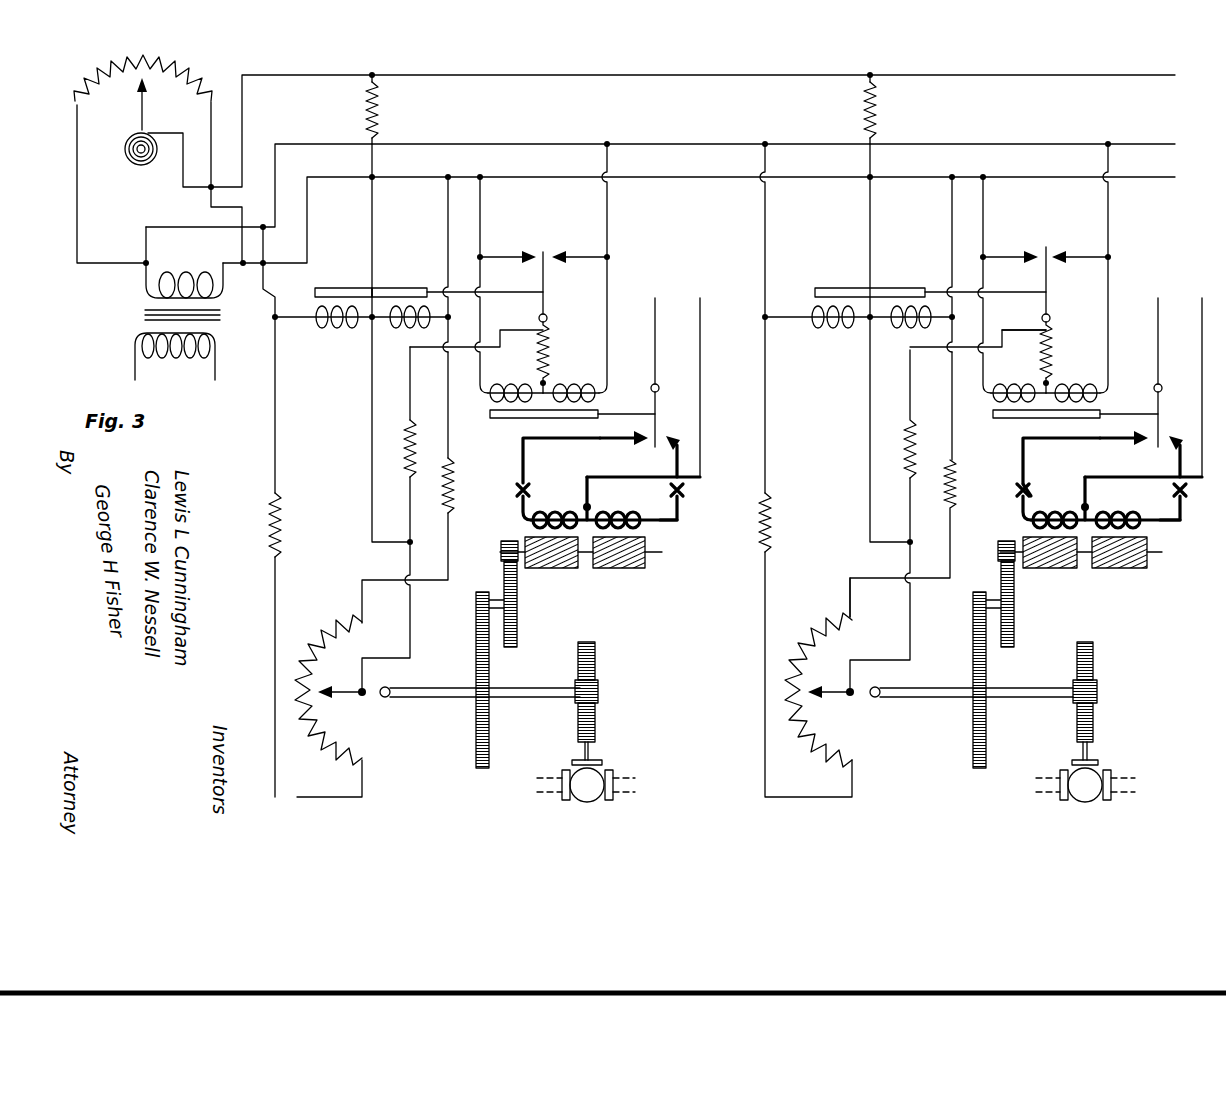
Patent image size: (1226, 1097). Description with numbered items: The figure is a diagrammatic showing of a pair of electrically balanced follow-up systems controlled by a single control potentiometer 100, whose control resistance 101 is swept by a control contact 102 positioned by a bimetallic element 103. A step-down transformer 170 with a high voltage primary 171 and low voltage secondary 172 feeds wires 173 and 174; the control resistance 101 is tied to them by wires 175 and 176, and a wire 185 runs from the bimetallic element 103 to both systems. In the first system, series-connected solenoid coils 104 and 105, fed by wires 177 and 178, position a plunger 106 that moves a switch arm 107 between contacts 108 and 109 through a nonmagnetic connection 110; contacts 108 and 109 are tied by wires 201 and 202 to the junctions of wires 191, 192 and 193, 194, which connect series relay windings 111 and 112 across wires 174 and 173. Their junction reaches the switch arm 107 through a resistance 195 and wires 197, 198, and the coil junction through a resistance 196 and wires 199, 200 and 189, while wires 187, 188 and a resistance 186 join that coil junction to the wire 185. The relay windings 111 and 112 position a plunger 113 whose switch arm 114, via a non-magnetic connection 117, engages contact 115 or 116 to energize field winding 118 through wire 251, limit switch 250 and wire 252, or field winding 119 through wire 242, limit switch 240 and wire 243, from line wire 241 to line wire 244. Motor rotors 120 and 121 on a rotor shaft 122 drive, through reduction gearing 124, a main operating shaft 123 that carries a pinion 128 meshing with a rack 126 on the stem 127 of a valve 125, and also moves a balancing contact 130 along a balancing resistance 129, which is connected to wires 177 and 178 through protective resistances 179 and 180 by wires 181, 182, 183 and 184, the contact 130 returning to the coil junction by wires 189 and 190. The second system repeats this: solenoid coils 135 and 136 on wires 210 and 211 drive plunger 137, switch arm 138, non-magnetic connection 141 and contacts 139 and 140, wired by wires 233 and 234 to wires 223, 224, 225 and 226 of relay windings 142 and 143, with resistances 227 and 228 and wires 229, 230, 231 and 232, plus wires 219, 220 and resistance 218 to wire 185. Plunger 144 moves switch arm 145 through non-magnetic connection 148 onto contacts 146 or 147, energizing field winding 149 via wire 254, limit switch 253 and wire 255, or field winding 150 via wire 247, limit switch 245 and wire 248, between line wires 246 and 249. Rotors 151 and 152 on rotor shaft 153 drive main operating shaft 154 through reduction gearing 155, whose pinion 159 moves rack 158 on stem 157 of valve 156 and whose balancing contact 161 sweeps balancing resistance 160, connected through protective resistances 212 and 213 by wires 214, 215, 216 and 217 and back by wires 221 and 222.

The control potentiometer 100 is at (174, 70).
The control resistance 101 is at (210, 84).
The control contact 102 is at (138, 112).
The bimetallic element 103 is at (150, 166).
The solenoid coil 104 is at (334, 330).
The solenoid coil 105 is at (404, 326).
The plunger 106 is at (338, 286).
The switch arm 107 is at (546, 280).
The contact 108 is at (527, 250).
The contact 109 is at (560, 250).
The nonmagnetic connection 110 is at (428, 284).
The relay winding 111 is at (516, 390).
The relay winding 112 is at (578, 390).
The plunger 113 is at (520, 418).
The switch arm 114 is at (658, 428).
The contact 115 is at (642, 434).
The contact 116 is at (674, 452).
The non-magnetic connection 117 is at (625, 410).
The field winding 118 is at (562, 510).
The field winding 119 is at (622, 510).
The motor rotor 120 is at (558, 570).
The motor rotor 121 is at (624, 570).
The rotor shaft 122 is at (505, 542).
The main operating shaft 123 is at (520, 700).
The reduction gearing 124 is at (517, 612).
The valve 125 is at (596, 780).
The rack 126 is at (596, 656).
The stem 127 is at (590, 752).
The pinion 128 is at (600, 688).
The balancing resistance 129 is at (330, 640).
The balancing contact 130 is at (348, 698).
The solenoid coil 135 is at (832, 326).
The solenoid coil 136 is at (904, 326).
The plunger 137 is at (846, 276).
The switch arm 138 is at (1050, 286).
The contact 139 is at (1034, 253).
The contact 140 is at (1060, 250).
The non-magnetic connection 141 is at (998, 292).
The relay winding 142 is at (1022, 390).
The relay winding 143 is at (1080, 390).
The plunger 144 is at (1006, 418).
The switch arm 145 is at (1162, 412).
The contact 146 is at (1140, 444).
The contact 147 is at (1176, 434).
The non-magnetic connection 148 is at (1128, 412).
The field winding 149 is at (1058, 510).
The field winding 150 is at (1124, 510).
The motor rotor 151 is at (1076, 570).
The motor rotor 152 is at (1136, 570).
The rotor shaft 153 is at (1016, 556).
The main operating shaft 154 is at (1024, 698).
The reduction gearing 155 is at (1015, 612).
The valve 156 is at (1096, 780).
The stem 157 is at (1090, 752).
The rack 158 is at (1094, 656).
The pinion 159 is at (1098, 688).
The balancing resistance 160 is at (820, 640).
The balancing contact 161 is at (850, 698).
The step-down transformer 170 is at (141, 316).
The high voltage primary 171 is at (188, 366).
The low voltage secondary 172 is at (186, 278).
The wire 173 is at (665, 146).
The wire 174 is at (690, 178).
The wire 175 is at (77, 200).
The wire 176 is at (210, 120).
The wire 177 is at (262, 292).
The wire 178 is at (445, 232).
The protective resistance 179 is at (281, 518).
The protective resistance 180 is at (456, 470).
The wire 181 is at (272, 440).
The wire 182 is at (284, 566).
The wire 183 is at (452, 426).
The wire 184 is at (450, 552).
The wire 185 is at (661, 131).
The resistance 186 is at (380, 118).
The wire 187 is at (370, 232).
The wire 188 is at (380, 88).
The wire 189 is at (370, 424).
The wire 190 is at (414, 632).
The wire 191 is at (484, 290).
The wire 192 is at (482, 212).
The wire 193 is at (610, 274).
The wire 194 is at (610, 216).
The resistance 195 is at (550, 340).
The resistance 196 is at (406, 470).
The wire 197 is at (538, 360).
The wire 198 is at (548, 318).
The wire 199 is at (412, 408).
The wire 200 is at (408, 524).
The wire 201 is at (510, 256).
The wire 202 is at (590, 256).
The wire 210 is at (770, 200).
The wire 211 is at (948, 232).
The protective resistance 212 is at (772, 516).
The protective resistance 213 is at (958, 506).
The wire 214 is at (767, 420).
The wire 215 is at (768, 572).
The wire 216 is at (952, 432).
The wire 217 is at (880, 578).
The resistance 218 is at (878, 118).
The wire 219 is at (874, 212).
The wire 220 is at (878, 88).
The wire 221 is at (868, 436).
The wire 222 is at (910, 626).
The wire 223 is at (984, 308).
The wire 224 is at (988, 212).
The wire 225 is at (1112, 276).
The wire 226 is at (1112, 206).
The resistance 227 is at (1054, 344).
The resistance 228 is at (906, 466).
The wire 229 is at (1054, 366).
The wire 230 is at (1051, 320).
The wire 231 is at (1022, 330).
The wire 232 is at (908, 506).
The wire 233 is at (1010, 254).
The wire 234 is at (1090, 256).
The limit switch 240 is at (684, 488).
The line wire 241 is at (656, 308).
The wire 242 is at (688, 438).
The wire 243 is at (672, 520).
The line wire 244 is at (698, 342).
The limit switch 245 is at (1188, 492).
The line wire 246 is at (1168, 298).
The wire 247 is at (1178, 454).
The wire 248 is at (1172, 522).
The line wire 249 is at (1200, 344).
The limit switch 250 is at (516, 490).
The wire 251 is at (530, 460).
The wire 252 is at (520, 510).
The limit switch 253 is at (1026, 484).
The wire 254 is at (1026, 452).
The wire 255 is at (1016, 490).